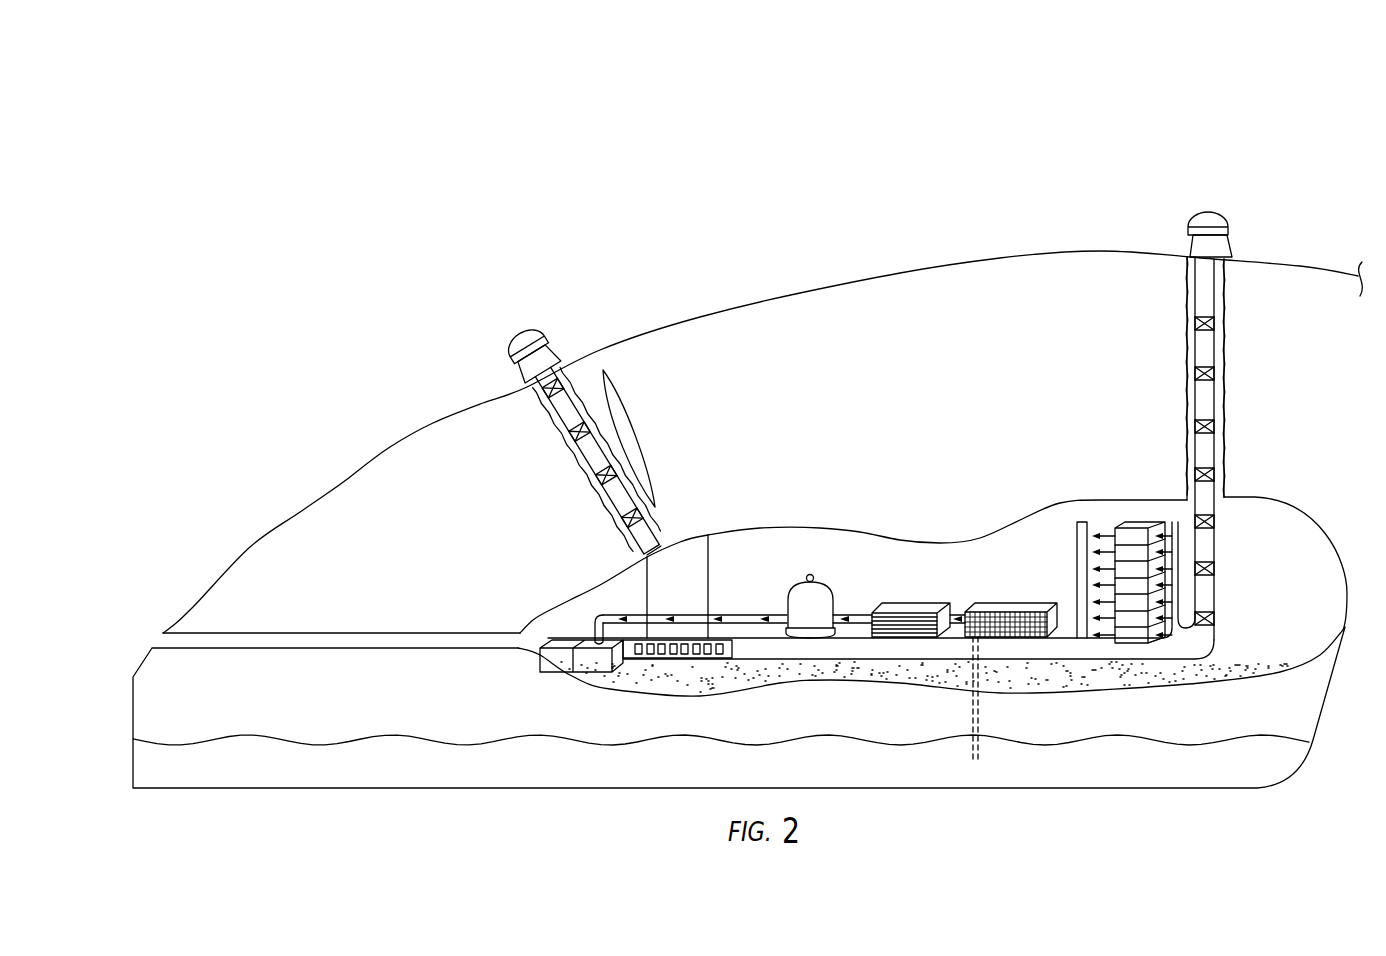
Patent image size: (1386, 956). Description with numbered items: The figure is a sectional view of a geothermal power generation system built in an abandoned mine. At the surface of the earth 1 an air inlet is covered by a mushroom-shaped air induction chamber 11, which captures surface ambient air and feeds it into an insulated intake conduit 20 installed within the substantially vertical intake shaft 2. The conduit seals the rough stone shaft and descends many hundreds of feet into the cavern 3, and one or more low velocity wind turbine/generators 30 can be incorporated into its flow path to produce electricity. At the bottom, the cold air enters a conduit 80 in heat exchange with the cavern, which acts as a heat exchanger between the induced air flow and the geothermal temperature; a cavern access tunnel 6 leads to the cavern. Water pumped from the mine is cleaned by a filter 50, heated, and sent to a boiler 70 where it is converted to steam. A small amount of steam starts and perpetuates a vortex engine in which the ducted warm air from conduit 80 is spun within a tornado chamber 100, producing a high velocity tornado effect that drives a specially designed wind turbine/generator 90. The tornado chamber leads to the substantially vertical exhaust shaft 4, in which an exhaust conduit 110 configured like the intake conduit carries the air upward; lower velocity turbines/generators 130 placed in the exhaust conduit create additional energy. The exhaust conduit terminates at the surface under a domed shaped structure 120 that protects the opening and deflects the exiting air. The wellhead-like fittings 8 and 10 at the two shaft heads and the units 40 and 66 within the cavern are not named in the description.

The surface of the earth 1 is at (1190, 262).
The substantially vertical intake shaft 2 is at (1187, 340).
The cavern 3 is at (855, 533).
The substantially vertical exhaust shaft 4 is at (559, 418).
The cavern access tunnel 6 is at (449, 633).
The inclined wellhead 8 is at (557, 345).
The wellhead 10 is at (1235, 243).
The air induction chamber 11 is at (1229, 223).
The insulated intake conduit 20 is at (1228, 344).
The low velocity wind turbine/generator 30 is at (1215, 376).
The heat exchanger 40 is at (1120, 526).
The filter 50 is at (1020, 603).
The processing unit 66 is at (930, 605).
The boiler 70 is at (808, 582).
The conduit 80 is at (823, 650).
The wind turbine/generator 90 is at (538, 673).
The tornado chamber 100 is at (708, 566).
The exhaust conduit 110 is at (660, 513).
The domed shaped structure 120 is at (540, 333).
The lower velocity turbines/generators 130 is at (604, 371).